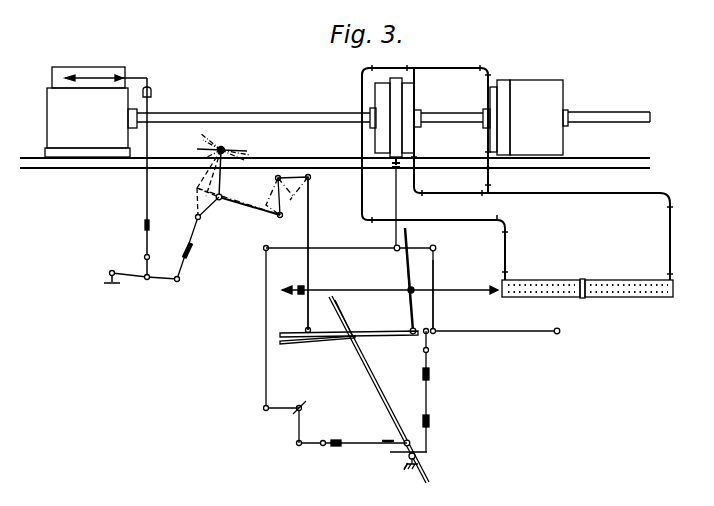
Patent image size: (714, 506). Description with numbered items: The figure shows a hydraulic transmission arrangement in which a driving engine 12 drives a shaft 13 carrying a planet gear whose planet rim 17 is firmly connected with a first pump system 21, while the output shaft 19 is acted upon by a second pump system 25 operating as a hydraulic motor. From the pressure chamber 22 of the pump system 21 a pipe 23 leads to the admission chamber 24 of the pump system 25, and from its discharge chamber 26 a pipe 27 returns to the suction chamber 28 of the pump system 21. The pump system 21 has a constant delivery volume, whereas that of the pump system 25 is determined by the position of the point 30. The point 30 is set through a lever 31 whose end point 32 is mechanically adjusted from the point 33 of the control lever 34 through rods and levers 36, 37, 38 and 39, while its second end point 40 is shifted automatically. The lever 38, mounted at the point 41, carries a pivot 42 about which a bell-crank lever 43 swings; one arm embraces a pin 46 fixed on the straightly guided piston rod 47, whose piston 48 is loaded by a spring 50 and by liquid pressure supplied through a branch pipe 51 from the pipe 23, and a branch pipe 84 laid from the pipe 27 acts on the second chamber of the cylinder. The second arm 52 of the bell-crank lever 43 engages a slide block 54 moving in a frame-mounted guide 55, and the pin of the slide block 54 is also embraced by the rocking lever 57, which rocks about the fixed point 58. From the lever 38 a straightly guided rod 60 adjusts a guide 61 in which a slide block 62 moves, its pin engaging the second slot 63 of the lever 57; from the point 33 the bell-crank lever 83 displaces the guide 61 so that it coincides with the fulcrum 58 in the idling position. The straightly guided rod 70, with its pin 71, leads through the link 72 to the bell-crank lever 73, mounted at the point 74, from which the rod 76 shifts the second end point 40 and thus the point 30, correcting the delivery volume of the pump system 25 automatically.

The driving engine 12 is at (162, 148).
The shaft 13 is at (246, 114).
The planet rim 17 is at (539, 117).
The shaft 19 is at (596, 116).
The pump system 21 is at (503, 83).
The pressure chamber 22 is at (489, 152).
The pipe 23 is at (441, 196).
The admission chamber 24 is at (410, 145).
The second pump system 25 is at (396, 117).
The discharge chamber 26 is at (404, 97).
The pipe 27 is at (478, 70).
The suction chamber 28 is at (488, 108).
The point 30 is at (394, 246).
The lever 31 is at (360, 250).
The end point 32 is at (436, 249).
The point 33 is at (222, 196).
The control lever 34 is at (226, 150).
The rod 36 is at (160, 283).
The rod 37 is at (308, 236).
The lever 38 is at (491, 324).
The rod 39 is at (435, 276).
The second end point 40 is at (263, 250).
The point 41 is at (562, 334).
The pivot 42 is at (412, 318).
The bell-crank lever 43 is at (410, 312).
The pin 46 is at (410, 293).
The piston rod 47 is at (340, 291).
The piston 48 is at (583, 298).
The spring 50 is at (556, 298).
The branch pipe 51 is at (668, 262).
The second arm 52 is at (298, 342).
The slide block 54 is at (349, 340).
The guide 55 is at (296, 333).
The rocking lever 57 is at (383, 395).
The fixed point 58 is at (410, 465).
The rod 60 is at (427, 407).
The guide 61 is at (388, 446).
The slide block 62 is at (404, 462).
The second slot 63 is at (416, 452).
The rod 70 is at (353, 451).
The pin 71 is at (408, 440).
The link 72 is at (303, 446).
The bell-crank lever 73 is at (297, 425).
The point 74 is at (304, 406).
The rod 76 is at (266, 372).
The bell-crank lever 83 is at (646, 297).
The branch pipe 84 is at (147, 210).